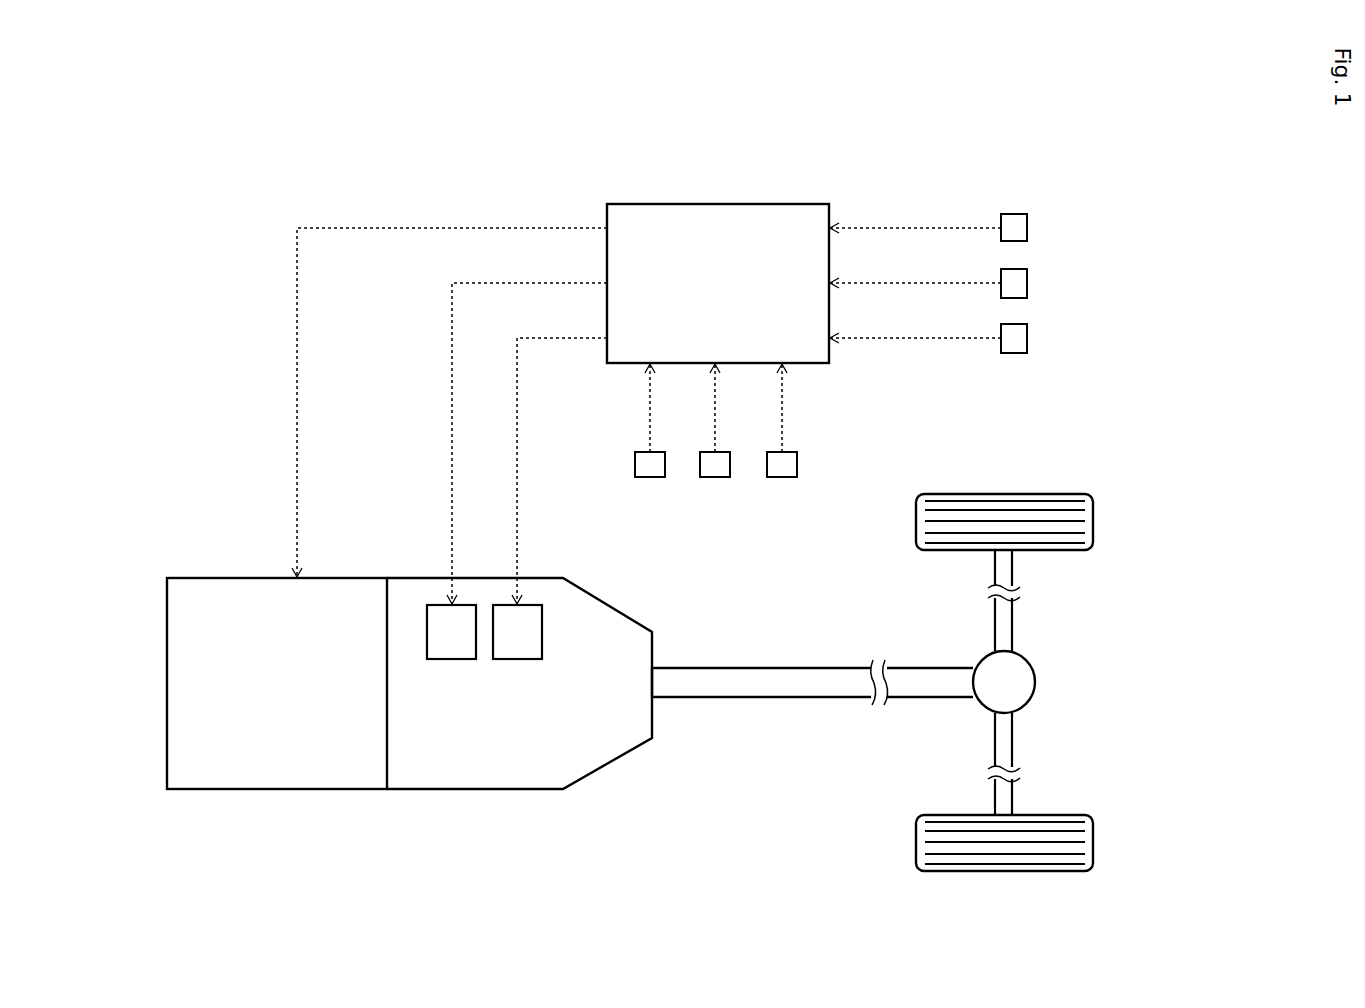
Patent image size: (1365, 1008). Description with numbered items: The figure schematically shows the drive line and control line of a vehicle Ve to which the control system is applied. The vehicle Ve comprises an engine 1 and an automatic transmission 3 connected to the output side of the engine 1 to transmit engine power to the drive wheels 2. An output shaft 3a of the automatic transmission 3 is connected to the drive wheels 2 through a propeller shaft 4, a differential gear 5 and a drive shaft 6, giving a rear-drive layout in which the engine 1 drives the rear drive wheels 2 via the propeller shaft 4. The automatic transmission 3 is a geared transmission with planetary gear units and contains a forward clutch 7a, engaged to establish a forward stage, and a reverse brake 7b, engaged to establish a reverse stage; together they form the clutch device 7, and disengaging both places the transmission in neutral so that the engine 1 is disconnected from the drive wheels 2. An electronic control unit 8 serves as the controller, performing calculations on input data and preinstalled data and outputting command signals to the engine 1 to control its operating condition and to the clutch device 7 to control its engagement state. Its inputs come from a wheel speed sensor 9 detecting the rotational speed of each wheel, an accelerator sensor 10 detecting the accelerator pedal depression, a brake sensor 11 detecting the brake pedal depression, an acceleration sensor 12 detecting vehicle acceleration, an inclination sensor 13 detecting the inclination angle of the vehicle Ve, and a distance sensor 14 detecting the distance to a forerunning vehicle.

The vehicle Ve is at (225, 335).
The engine 1 is at (258, 775).
The drive wheels 2 is at (1093, 510).
The automatic transmission 3 is at (449, 778).
The output shaft 3a is at (657, 681).
The propeller shaft 4 is at (798, 688).
The differential gear 5 is at (1037, 685).
The drive shaft 6 is at (1013, 621).
The clutch device 7 is at (555, 710).
The forward clutch 7a is at (452, 648).
The reverse brake 7b is at (512, 648).
The electronic control unit 8 is at (720, 203).
The wheel speed sensor 9 is at (1027, 228).
The accelerator sensor 10 is at (1027, 283).
The brake sensor 11 is at (1027, 338).
The acceleration sensor 12 is at (651, 477).
The inclination sensor 13 is at (718, 477).
The distance sensor 14 is at (782, 477).